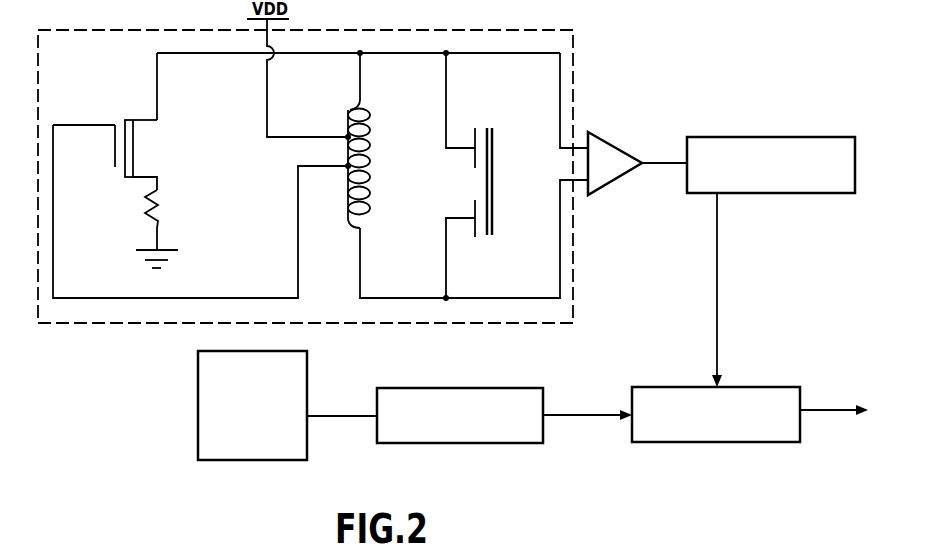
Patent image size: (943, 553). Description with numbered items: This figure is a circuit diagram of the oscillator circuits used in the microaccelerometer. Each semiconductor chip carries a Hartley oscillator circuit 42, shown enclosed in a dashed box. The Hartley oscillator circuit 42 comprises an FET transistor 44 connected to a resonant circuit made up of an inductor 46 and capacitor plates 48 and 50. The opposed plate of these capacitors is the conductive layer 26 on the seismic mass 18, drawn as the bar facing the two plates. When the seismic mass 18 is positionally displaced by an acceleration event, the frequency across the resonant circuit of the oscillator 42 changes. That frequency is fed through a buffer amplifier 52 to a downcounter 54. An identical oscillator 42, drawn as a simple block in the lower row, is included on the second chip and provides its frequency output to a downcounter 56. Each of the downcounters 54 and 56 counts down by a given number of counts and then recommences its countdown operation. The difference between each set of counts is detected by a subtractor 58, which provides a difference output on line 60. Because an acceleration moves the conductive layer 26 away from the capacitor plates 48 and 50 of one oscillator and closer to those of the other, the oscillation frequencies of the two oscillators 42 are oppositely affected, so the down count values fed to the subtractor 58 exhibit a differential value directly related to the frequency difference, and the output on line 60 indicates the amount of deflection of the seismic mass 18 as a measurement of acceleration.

The seismic mass 18 is at (497, 137).
The conductive layer 26 is at (486, 245).
The Hartley oscillator circuit 42 is at (577, 72).
The FET transistor 44 is at (140, 153).
The inductor 46 is at (370, 112).
The capacitor plate 48 is at (473, 138).
The capacitor plate 50 is at (473, 230).
The buffer amplifier 52 is at (605, 135).
The downcounter 54 is at (770, 137).
The downcounter 56 is at (435, 388).
The subtractor 58 is at (763, 387).
The line 60 is at (808, 412).